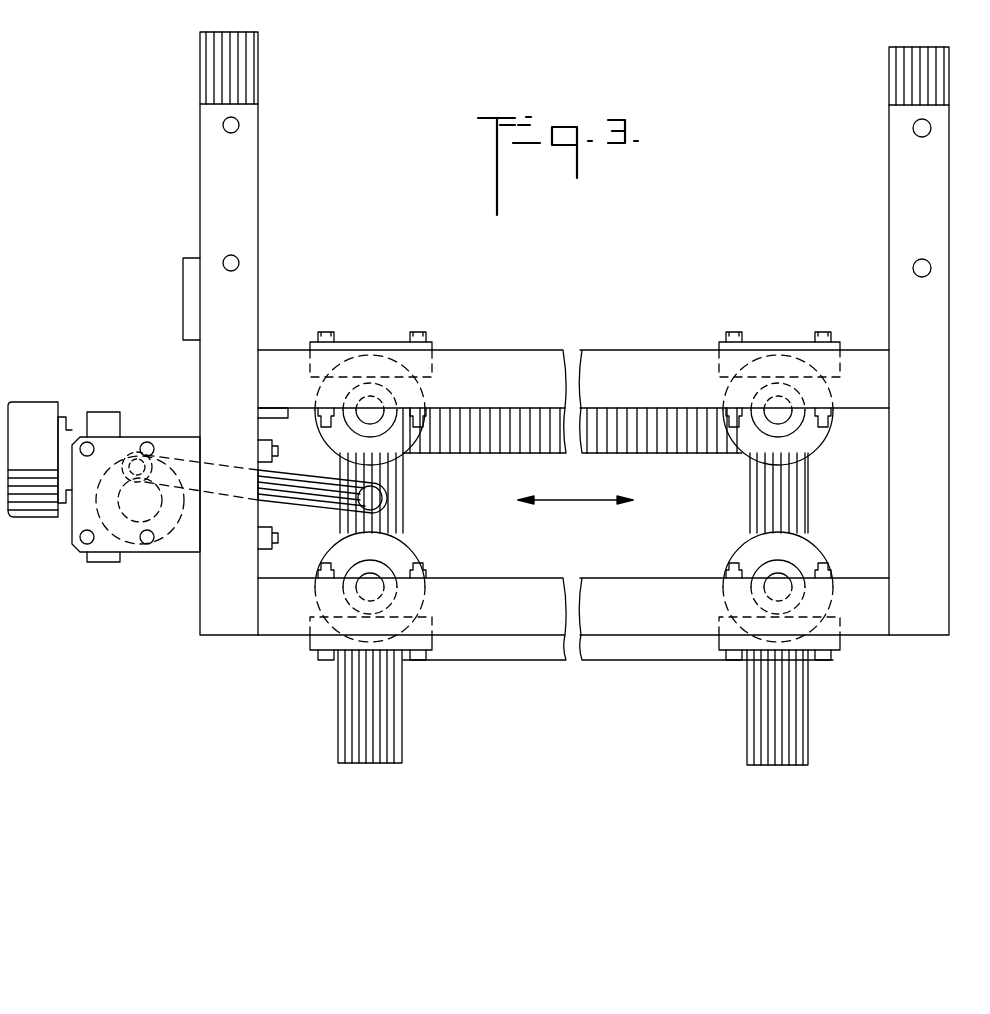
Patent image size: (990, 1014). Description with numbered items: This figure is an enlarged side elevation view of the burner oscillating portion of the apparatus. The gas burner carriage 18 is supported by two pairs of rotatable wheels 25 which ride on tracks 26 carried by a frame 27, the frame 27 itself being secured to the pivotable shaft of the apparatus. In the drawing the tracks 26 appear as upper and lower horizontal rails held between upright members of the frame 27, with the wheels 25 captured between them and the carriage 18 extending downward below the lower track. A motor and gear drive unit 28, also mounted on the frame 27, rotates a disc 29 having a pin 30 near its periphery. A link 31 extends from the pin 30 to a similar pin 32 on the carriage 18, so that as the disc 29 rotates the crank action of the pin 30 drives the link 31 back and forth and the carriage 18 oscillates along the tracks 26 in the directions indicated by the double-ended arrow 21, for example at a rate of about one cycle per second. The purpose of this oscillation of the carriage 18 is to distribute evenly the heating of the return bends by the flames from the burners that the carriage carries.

The gas burner carriage 18 is at (352, 703).
The double-ended arrow 21 is at (601, 500).
The rotatable wheels 25 is at (418, 430).
The tracks 26 is at (432, 358).
The frame 27 is at (932, 382).
The motor and gear drive unit 28 is at (106, 397).
The disc 29 is at (170, 553).
The pin 30 is at (136, 455).
The link 31 is at (298, 482).
The pin 32 is at (383, 497).